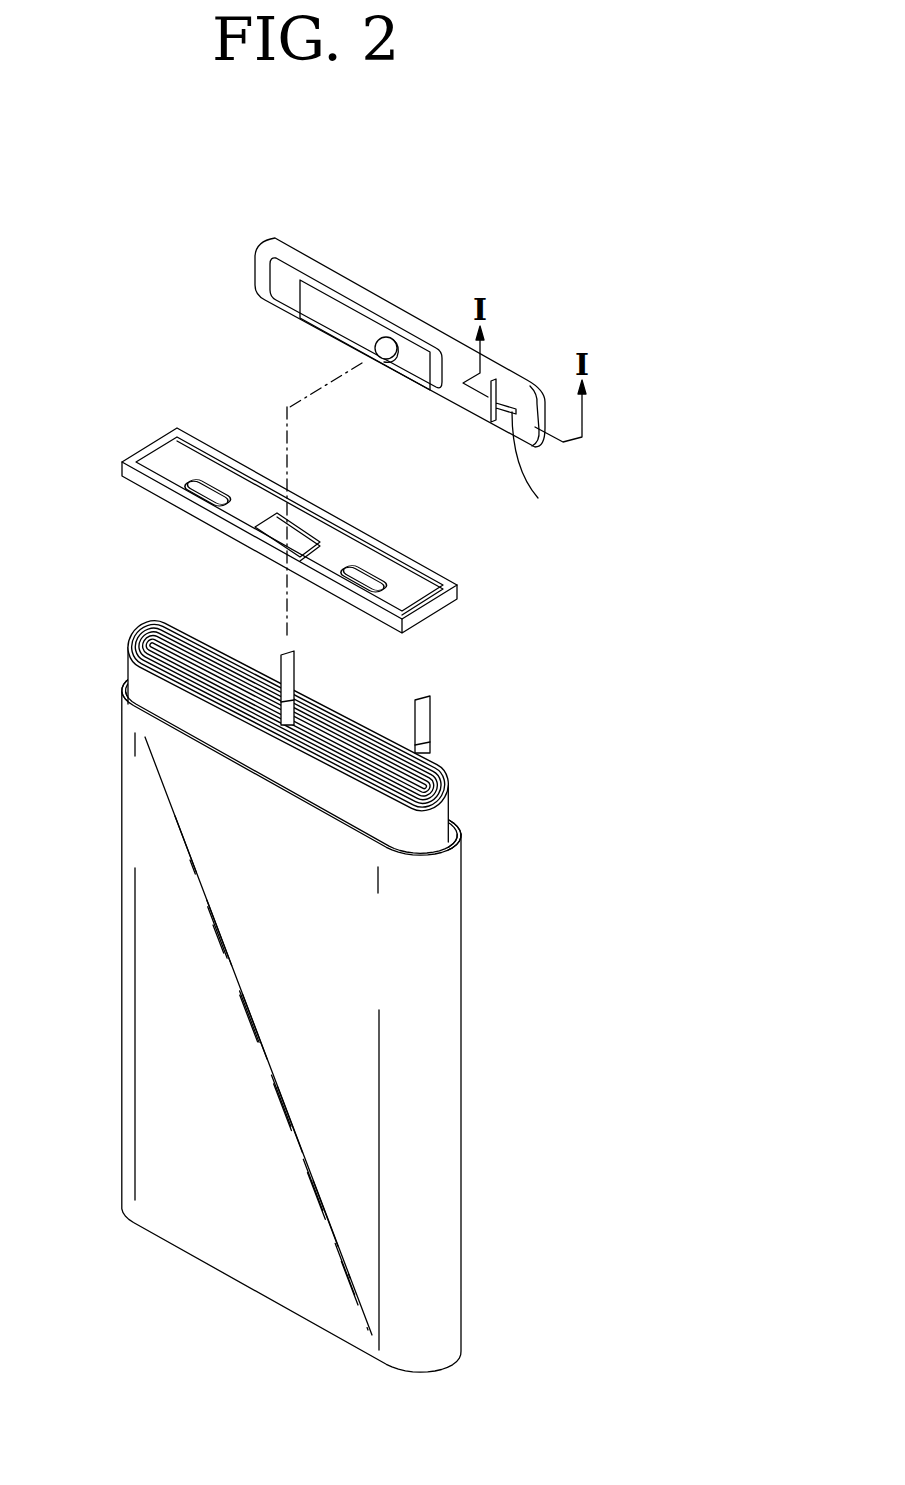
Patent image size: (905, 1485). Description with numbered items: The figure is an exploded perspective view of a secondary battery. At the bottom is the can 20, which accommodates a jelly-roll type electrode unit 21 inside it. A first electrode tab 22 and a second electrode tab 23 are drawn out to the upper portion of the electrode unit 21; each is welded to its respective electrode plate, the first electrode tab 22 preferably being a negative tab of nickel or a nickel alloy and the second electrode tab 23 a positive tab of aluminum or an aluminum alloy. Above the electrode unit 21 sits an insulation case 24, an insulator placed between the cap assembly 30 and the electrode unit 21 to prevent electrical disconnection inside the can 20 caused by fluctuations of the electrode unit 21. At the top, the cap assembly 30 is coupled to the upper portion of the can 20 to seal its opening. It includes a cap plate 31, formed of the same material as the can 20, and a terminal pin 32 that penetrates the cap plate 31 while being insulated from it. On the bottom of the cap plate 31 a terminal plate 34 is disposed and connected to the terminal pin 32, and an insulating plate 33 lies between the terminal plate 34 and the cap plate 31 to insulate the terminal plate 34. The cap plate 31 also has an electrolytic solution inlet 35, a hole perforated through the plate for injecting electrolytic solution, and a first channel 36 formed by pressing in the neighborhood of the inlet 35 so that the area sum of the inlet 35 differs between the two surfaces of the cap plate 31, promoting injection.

The can 20 is at (445, 907).
The jelly-roll type electrode unit 21 is at (162, 707).
The first electrode tab 22 is at (283, 655).
The second electrode tab 23 is at (418, 698).
The insulation case 24 is at (446, 580).
The cap assembly 30 is at (422, 384).
The cap plate 31 is at (502, 367).
The terminal pin 32 is at (382, 350).
The insulating plate 33 is at (287, 297).
The terminal plate 34 is at (320, 312).
The electrolytic solution inlet 35 is at (490, 396).
The first channel 36 is at (537, 471).